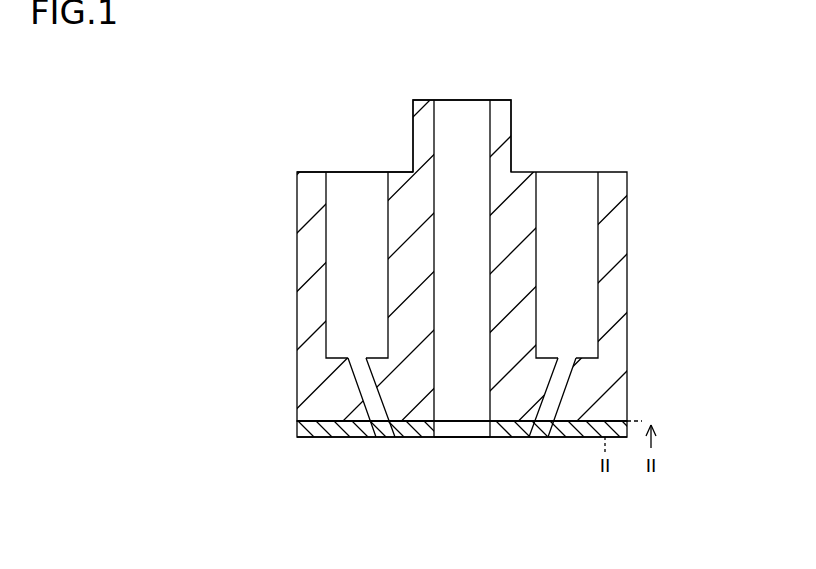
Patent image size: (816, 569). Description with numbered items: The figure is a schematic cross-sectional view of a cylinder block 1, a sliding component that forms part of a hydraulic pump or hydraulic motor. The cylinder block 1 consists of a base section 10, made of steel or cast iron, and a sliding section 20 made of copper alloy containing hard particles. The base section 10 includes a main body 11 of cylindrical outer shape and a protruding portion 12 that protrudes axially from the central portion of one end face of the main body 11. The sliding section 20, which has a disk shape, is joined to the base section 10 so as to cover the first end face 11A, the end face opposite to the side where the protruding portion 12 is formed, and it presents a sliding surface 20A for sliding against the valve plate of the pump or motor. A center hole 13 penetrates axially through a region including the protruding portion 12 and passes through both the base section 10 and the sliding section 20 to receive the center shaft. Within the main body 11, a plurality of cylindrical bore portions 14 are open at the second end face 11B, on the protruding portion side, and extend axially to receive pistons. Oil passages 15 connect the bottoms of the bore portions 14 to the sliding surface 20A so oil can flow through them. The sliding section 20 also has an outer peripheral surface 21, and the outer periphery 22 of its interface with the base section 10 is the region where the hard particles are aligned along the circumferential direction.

The cylinder block 1 is at (653, 82).
The base section 10 is at (689, 122).
The main body 11 is at (612, 212).
The first end face 11A is at (352, 424).
The second end face 11B is at (304, 172).
The protruding portion 12 is at (506, 134).
The center hole 13 is at (436, 133).
The bore portion 14 is at (328, 206).
The oil passage 15 is at (370, 394).
The sliding section 20 is at (566, 436).
The sliding surface 20A is at (400, 440).
The outer peripheral surface 21 is at (297, 432).
The outer periphery 22 is at (298, 421).